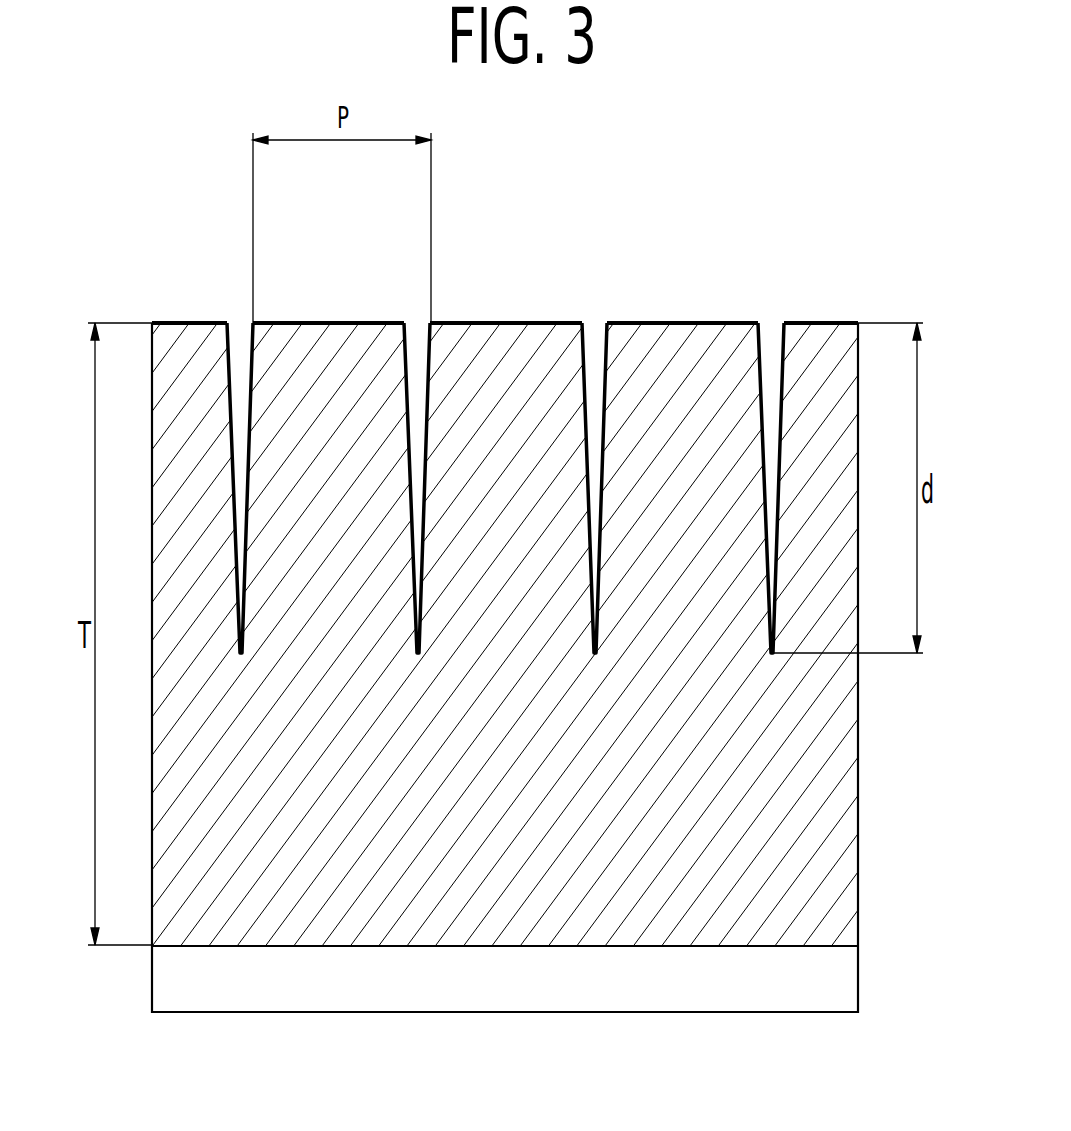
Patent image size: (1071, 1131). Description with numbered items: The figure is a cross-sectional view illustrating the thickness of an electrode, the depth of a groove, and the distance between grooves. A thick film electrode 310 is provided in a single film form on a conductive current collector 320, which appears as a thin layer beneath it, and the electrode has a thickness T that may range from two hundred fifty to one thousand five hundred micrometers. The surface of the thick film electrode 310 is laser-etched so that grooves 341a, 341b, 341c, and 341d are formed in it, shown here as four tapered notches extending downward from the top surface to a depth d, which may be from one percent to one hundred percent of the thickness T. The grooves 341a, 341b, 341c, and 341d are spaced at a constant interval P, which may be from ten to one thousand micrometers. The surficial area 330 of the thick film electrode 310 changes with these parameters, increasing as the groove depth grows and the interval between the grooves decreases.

The thick film electrode 310 is at (840, 792).
The conductive current collector 320 is at (840, 982).
The surficial area 330 is at (190, 322).
The groove 341a is at (238, 337).
The groove 341b is at (418, 337).
The groove 341c is at (593, 335).
The groove 341d is at (770, 335).